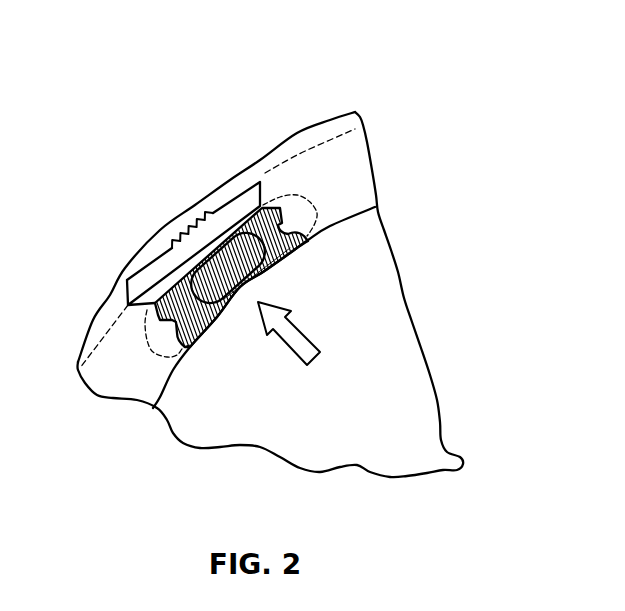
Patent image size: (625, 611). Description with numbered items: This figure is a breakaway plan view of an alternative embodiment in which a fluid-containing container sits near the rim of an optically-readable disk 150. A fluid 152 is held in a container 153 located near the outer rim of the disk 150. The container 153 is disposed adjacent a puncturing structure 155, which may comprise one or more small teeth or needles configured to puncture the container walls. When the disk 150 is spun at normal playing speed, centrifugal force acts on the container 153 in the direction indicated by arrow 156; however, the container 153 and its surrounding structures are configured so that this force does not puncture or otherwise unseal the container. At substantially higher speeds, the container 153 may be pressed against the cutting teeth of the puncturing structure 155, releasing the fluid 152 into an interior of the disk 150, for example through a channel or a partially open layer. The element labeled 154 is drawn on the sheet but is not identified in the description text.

The optically-readable disk 150 is at (405, 284).
The fluid 152 is at (240, 224).
The container 153 is at (170, 276).
The flange 154 is at (308, 129).
The puncturing structure 155 is at (200, 222).
The arrow 156 is at (300, 360).